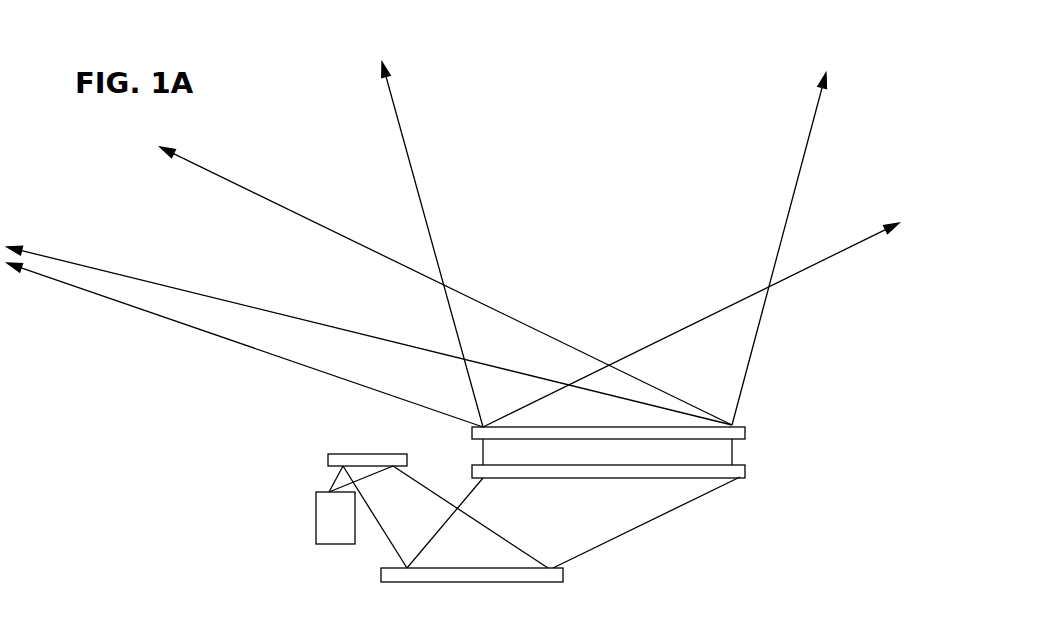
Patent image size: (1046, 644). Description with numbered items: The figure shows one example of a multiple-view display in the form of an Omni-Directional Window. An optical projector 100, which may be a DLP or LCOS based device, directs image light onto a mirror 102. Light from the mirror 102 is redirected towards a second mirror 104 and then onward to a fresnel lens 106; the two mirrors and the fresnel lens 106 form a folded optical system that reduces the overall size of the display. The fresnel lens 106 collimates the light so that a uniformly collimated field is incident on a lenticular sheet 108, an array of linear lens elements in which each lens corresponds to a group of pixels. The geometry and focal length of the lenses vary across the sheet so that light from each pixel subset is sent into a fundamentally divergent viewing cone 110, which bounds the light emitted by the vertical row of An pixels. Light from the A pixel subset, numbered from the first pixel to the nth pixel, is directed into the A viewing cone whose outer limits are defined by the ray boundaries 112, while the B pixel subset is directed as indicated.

The optical projector 100 is at (313, 526).
The mirror 102 is at (343, 458).
The mirror 104 is at (382, 577).
The fresnel lens 106 is at (740, 477).
The lenticular sheet 108 is at (472, 432).
The viewing cone 110 is at (493, 367).
The ray boundaries 112 is at (32, 267).